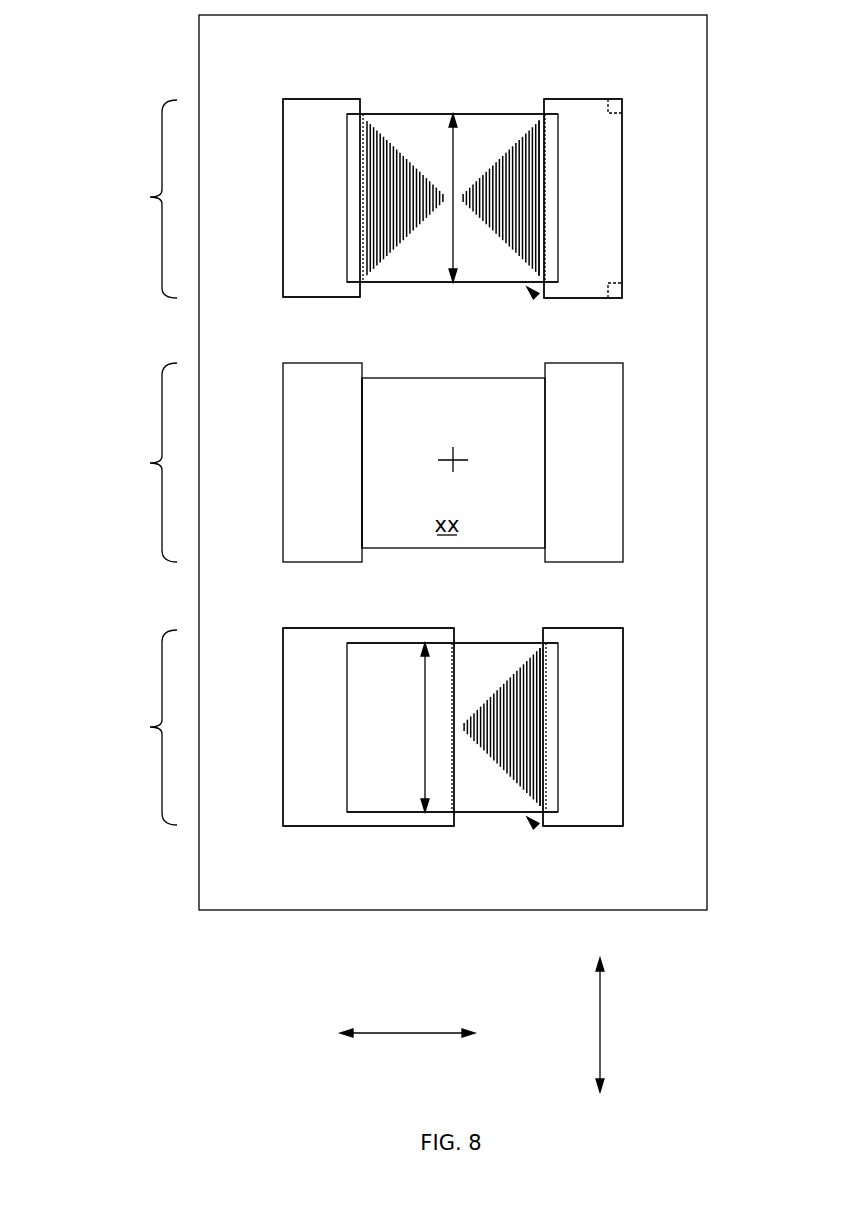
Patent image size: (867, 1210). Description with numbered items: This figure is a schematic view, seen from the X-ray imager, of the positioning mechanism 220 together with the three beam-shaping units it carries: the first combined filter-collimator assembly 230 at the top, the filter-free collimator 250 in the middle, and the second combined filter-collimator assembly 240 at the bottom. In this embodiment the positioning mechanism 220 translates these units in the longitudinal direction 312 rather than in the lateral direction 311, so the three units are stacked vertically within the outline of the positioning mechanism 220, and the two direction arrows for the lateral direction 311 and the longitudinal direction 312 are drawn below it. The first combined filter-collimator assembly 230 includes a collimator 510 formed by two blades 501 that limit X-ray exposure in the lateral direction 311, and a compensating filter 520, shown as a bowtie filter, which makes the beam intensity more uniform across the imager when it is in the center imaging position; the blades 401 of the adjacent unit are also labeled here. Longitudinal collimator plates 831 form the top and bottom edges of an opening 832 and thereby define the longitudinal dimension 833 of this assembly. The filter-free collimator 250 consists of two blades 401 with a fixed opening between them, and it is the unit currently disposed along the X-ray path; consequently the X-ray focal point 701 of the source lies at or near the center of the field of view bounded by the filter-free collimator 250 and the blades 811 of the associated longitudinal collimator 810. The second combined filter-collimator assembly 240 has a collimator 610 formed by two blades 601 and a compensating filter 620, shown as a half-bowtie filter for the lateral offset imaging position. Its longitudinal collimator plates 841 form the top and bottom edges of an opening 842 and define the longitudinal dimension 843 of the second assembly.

The positioning mechanism 220 is at (707, 145).
The first combined filter-collimator assembly 230 is at (150, 197).
The filter-free collimator 250 is at (150, 463).
The second combined filter-collimator assembly 240 is at (150, 727).
The collimator 510 is at (310, 99).
The blades 501 is at (295, 208).
The blades 401 is at (573, 233).
The compensating filter 520 is at (396, 276).
The longitudinal collimator plates 831 is at (434, 106).
The longitudinal dimension 833 is at (453, 167).
The opening 832 is at (537, 297).
The blades 811 is at (434, 371).
The X-ray focal point 701 is at (442, 460).
The longitudinal collimator 810 is at (366, 572).
The collimator 610 is at (348, 628).
The blades 601 is at (294, 739).
The compensating filter 620 is at (463, 801).
The longitudinal collimator plates 841 is at (475, 638).
The longitudinal dimension 843 is at (423, 696).
The opening 842 is at (537, 827).
The lateral direction 311 is at (408, 1030).
The longitudinal direction 312 is at (597, 1015).